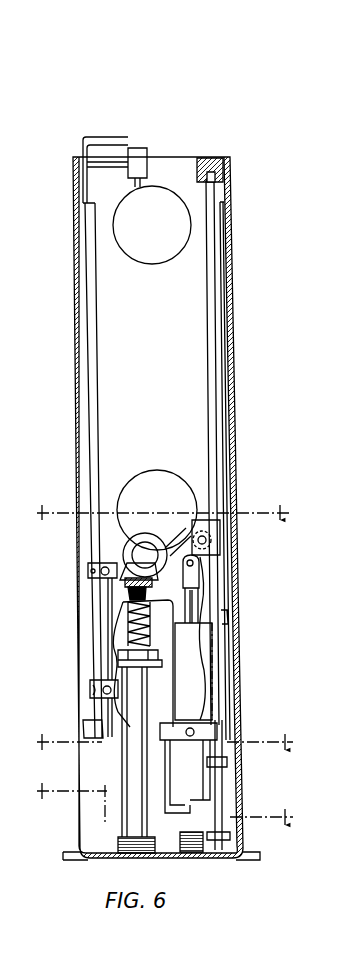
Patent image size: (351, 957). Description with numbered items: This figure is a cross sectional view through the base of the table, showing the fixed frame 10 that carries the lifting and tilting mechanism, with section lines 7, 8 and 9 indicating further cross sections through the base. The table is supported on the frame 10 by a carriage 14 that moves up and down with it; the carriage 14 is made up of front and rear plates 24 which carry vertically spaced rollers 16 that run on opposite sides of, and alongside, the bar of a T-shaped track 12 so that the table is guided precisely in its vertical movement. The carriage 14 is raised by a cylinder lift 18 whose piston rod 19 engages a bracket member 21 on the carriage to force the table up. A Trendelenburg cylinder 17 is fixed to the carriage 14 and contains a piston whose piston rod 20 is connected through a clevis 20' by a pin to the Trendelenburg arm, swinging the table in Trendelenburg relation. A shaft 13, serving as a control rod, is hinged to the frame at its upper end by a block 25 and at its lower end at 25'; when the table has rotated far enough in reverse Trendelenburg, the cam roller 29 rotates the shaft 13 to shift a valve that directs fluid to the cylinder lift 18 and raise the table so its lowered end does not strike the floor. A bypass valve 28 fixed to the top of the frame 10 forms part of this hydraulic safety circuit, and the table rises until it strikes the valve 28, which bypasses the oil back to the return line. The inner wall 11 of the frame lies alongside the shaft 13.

The section line 7- 7 is at (161, 526).
The section line 8- 8 is at (164, 755).
The section line 9- 9 is at (164, 817).
The fixed frame 10 is at (233, 386).
The inner liner 11 is at (226, 334).
The T-shaped track 12 is at (98, 303).
The shaft 13 is at (213, 283).
The carriage 14 is at (88, 573).
The rollers 16 is at (90, 693).
The Trendelenburg cylinder 17 is at (190, 814).
The cylinder lift 18 is at (128, 825).
The piston rod 19 is at (128, 601).
The piston rod 20 is at (224, 638).
The clevis 20' is at (241, 571).
The bracket member 21 is at (151, 584).
The plates 24 is at (112, 627).
The block 25 is at (210, 159).
The lower hinge 25' is at (217, 861).
The valve 28 is at (145, 149).
The cam roller 29 is at (213, 548).